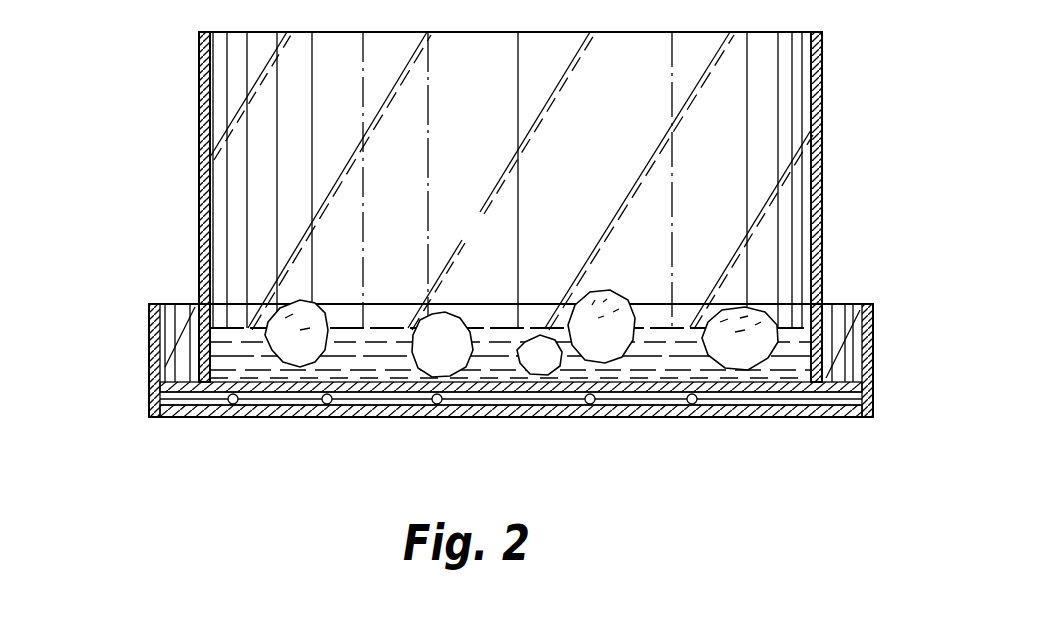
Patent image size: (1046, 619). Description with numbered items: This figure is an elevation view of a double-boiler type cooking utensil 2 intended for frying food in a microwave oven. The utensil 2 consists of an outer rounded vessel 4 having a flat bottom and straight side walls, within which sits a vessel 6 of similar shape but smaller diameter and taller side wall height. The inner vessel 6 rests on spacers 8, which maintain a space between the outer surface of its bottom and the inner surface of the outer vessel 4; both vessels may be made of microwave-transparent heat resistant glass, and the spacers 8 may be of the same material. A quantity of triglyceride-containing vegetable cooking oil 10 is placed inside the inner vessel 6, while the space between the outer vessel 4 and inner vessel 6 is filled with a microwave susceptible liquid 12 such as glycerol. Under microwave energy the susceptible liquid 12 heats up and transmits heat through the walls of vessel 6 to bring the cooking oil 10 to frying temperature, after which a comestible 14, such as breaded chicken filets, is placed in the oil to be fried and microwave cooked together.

The utensil 2 is at (160, 405).
The outer rounded vessel 4 is at (873, 357).
The vessel 6 is at (822, 108).
The spacers 8 is at (243, 418).
The vegetable cooking oil 10 is at (500, 327).
The microwave susceptible liquid 12 is at (172, 420).
The comestible 14 is at (617, 307).